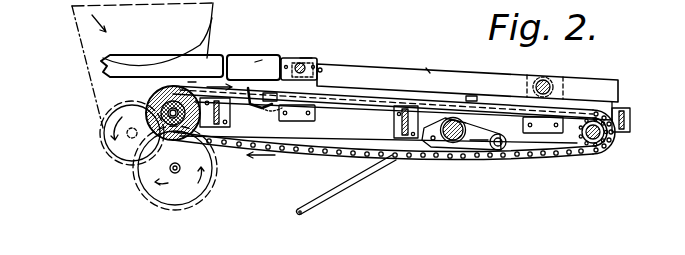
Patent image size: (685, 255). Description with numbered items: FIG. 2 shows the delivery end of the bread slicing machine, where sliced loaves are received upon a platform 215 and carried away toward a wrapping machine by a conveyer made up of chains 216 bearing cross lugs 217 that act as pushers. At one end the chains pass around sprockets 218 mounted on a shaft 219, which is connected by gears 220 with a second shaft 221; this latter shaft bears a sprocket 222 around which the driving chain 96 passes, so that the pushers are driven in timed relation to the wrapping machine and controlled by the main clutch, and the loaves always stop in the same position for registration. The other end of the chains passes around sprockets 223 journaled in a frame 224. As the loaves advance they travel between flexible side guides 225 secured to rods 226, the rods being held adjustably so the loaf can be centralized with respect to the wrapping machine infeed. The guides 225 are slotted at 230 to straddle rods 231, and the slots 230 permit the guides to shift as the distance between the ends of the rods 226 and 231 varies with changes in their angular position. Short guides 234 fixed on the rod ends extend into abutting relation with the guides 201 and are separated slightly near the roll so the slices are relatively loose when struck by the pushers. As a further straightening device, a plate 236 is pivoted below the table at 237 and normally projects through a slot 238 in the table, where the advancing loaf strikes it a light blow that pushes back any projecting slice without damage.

The driving chain 96 is at (82, 44).
The guides 201 is at (100, 71).
The platform 215 is at (356, 85).
The chains 216 is at (306, 152).
The cross lugs 217 is at (480, 97).
The sprockets 218 is at (192, 82).
The shaft 219 is at (173, 100).
The gears 220 is at (146, 93).
The shaft 221 is at (128, 137).
The sprocket 222 is at (100, 128).
The sprockets 223 is at (615, 130).
The frame 224 is at (528, 138).
The side guides 225 is at (437, 60).
The rods 226 is at (552, 77).
The slots 230 is at (321, 68).
The rods 231 is at (262, 110).
The short guides 234 is at (258, 63).
The plate 236 is at (253, 68).
The pivot 237 is at (250, 104).
The slot 238 is at (308, 56).